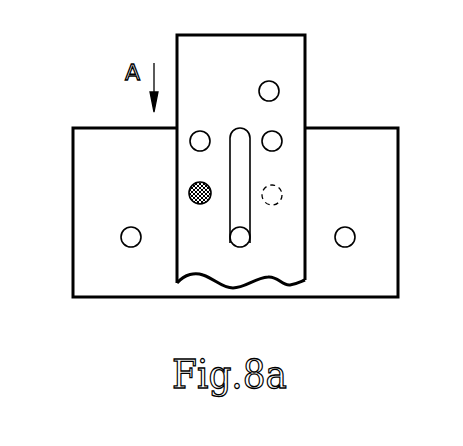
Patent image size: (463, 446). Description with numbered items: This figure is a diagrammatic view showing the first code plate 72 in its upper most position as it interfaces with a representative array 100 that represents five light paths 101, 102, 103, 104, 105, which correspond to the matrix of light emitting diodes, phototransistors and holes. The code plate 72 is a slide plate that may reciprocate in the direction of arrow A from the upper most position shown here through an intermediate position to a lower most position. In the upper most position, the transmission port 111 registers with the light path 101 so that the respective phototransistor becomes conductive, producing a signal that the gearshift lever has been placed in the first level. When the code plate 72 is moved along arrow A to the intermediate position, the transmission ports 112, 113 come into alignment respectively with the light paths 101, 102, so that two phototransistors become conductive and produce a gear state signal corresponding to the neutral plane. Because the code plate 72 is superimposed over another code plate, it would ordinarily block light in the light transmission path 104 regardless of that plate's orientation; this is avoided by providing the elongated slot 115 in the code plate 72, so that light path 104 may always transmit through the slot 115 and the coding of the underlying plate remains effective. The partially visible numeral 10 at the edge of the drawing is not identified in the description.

The first code plate 72 is at (289, 63).
The representative array 100 is at (337, 288).
The light path 101 is at (193, 184).
The light path 102 is at (295, 193).
The light path 103 is at (121, 236).
The light path 104 is at (245, 243).
The light path 105 is at (355, 240).
The transmission port 111 is at (205, 204).
The transmission port 112 is at (200, 141).
The transmission port 113 is at (277, 132).
The elongated slot 115 is at (250, 175).
The device (partial numeral) 10 is at (454, 216).